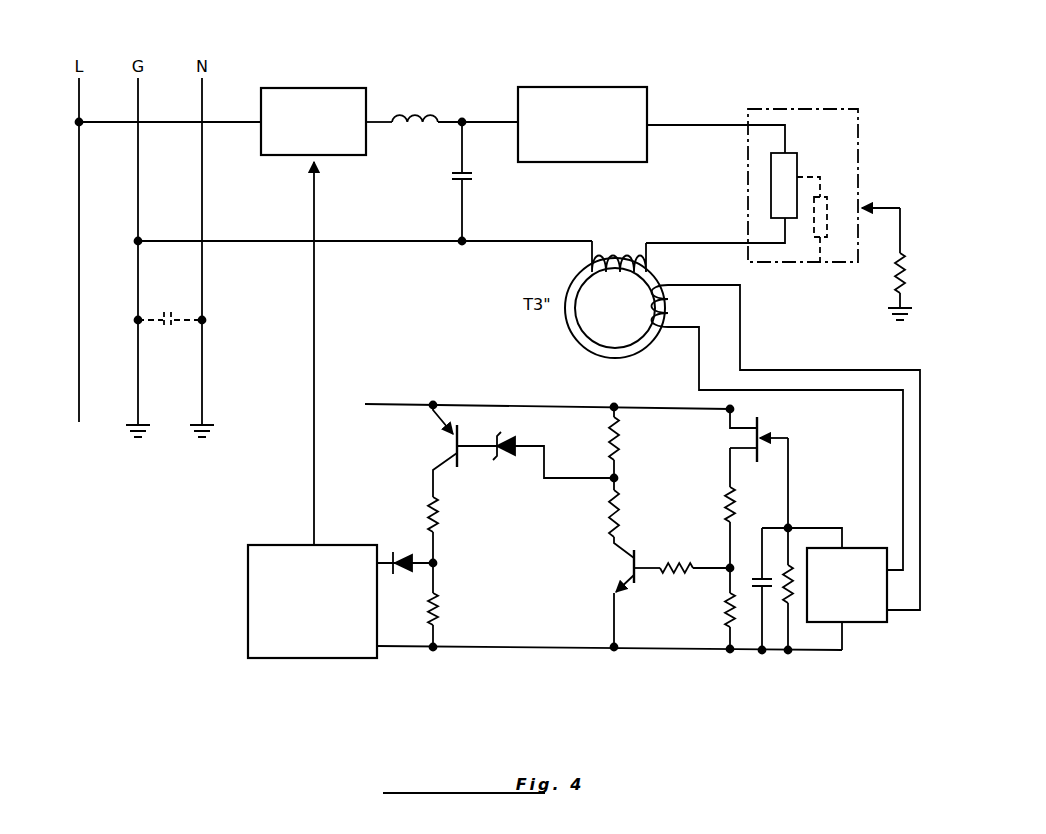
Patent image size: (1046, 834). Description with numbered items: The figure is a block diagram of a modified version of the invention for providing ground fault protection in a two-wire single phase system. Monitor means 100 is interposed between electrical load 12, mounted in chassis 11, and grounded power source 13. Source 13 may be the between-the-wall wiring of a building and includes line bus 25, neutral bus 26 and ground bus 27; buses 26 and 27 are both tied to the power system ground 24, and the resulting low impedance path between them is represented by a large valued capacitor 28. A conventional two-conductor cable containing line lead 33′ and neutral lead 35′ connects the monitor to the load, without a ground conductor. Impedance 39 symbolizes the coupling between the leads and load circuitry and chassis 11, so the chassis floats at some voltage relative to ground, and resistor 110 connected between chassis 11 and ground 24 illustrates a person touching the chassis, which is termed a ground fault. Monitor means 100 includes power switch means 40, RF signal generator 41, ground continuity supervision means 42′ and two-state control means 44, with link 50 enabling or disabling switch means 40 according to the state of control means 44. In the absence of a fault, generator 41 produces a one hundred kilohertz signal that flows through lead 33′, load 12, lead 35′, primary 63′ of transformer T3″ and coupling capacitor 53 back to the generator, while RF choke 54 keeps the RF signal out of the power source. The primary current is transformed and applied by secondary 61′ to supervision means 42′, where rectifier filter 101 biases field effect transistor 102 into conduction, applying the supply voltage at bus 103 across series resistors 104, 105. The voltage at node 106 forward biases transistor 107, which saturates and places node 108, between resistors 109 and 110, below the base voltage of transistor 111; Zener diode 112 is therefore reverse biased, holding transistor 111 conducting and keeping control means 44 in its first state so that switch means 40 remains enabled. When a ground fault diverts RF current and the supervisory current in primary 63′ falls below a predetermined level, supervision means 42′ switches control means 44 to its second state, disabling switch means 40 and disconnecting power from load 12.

The monitor means 100 is at (676, 71).
The chassis 11 is at (850, 109).
The electrical load 12 is at (788, 175).
The power source 13 is at (151, 443).
The power system ground 24 is at (202, 407).
The line bus 25 is at (80, 182).
The neutral bus 26 is at (138, 215).
The ground bus 27 is at (202, 272).
The capacitor 28 is at (172, 330).
The line lead 33′ is at (710, 126).
The neutral lead 35′ is at (685, 243).
The impedance 39 is at (830, 197).
The power switch means 40 is at (323, 90).
The RF signal generator 41 is at (570, 100).
The ground continuity supervision means 42′ is at (477, 374).
The two-state control means 44 is at (250, 562).
The link 50 is at (314, 478).
The coupling capacitor 53 is at (469, 182).
The RF choke 54 is at (413, 115).
The secondary winding 61′ is at (675, 310).
The primary winding 63′ is at (612, 259).
The rectifier filter 101 is at (810, 504).
The field effect transistor 102 is at (760, 420).
The bus 103 is at (495, 404).
The resistor 104 is at (725, 505).
The resistor 105 is at (726, 608).
The node 106 is at (728, 566).
The transistor 107 is at (636, 550).
The node 108 is at (616, 478).
The resistor 109 is at (620, 433).
The resistor 110 is at (901, 222).
The transistor 111 is at (459, 464).
The Zener diode 112 is at (507, 461).